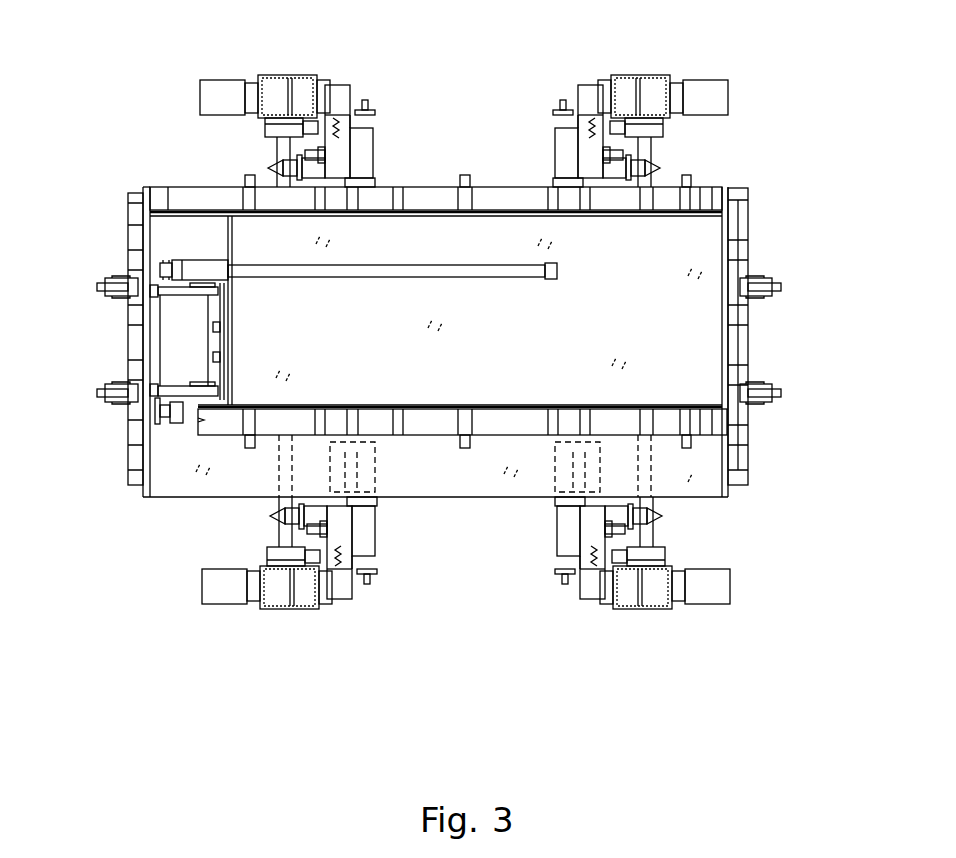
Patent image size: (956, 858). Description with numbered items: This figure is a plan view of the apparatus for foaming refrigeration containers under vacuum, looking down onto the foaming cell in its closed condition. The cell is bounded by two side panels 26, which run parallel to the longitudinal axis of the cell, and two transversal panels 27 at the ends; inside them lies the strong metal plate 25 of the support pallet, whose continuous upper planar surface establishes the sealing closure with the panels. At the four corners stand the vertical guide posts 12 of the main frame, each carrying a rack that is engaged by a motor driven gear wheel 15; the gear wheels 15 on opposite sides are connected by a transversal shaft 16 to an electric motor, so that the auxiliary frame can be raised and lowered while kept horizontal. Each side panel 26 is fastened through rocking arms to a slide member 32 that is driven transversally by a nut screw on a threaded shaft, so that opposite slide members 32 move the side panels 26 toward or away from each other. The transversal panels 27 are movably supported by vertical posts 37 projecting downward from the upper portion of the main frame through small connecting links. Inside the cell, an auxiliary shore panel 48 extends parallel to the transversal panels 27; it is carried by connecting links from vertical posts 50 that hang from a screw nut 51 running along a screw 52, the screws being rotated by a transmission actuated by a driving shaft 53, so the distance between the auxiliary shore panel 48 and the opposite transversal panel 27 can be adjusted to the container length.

The vertical guide post 12 is at (275, 92).
The motor driven gear wheel 15 is at (663, 125).
The transversal shaft 16 is at (658, 148).
The metal plate 25 is at (481, 338).
The side panel 26 is at (437, 195).
The transversal panel 27 is at (130, 422).
The slide member 32 is at (367, 142).
The vertical post 37 is at (115, 282).
The auxiliary shore panel 48 is at (212, 330).
The vertical post 50 is at (168, 312).
The screw nut 51 is at (205, 265).
The screw 52 is at (495, 268).
The driving shaft 53 is at (160, 352).